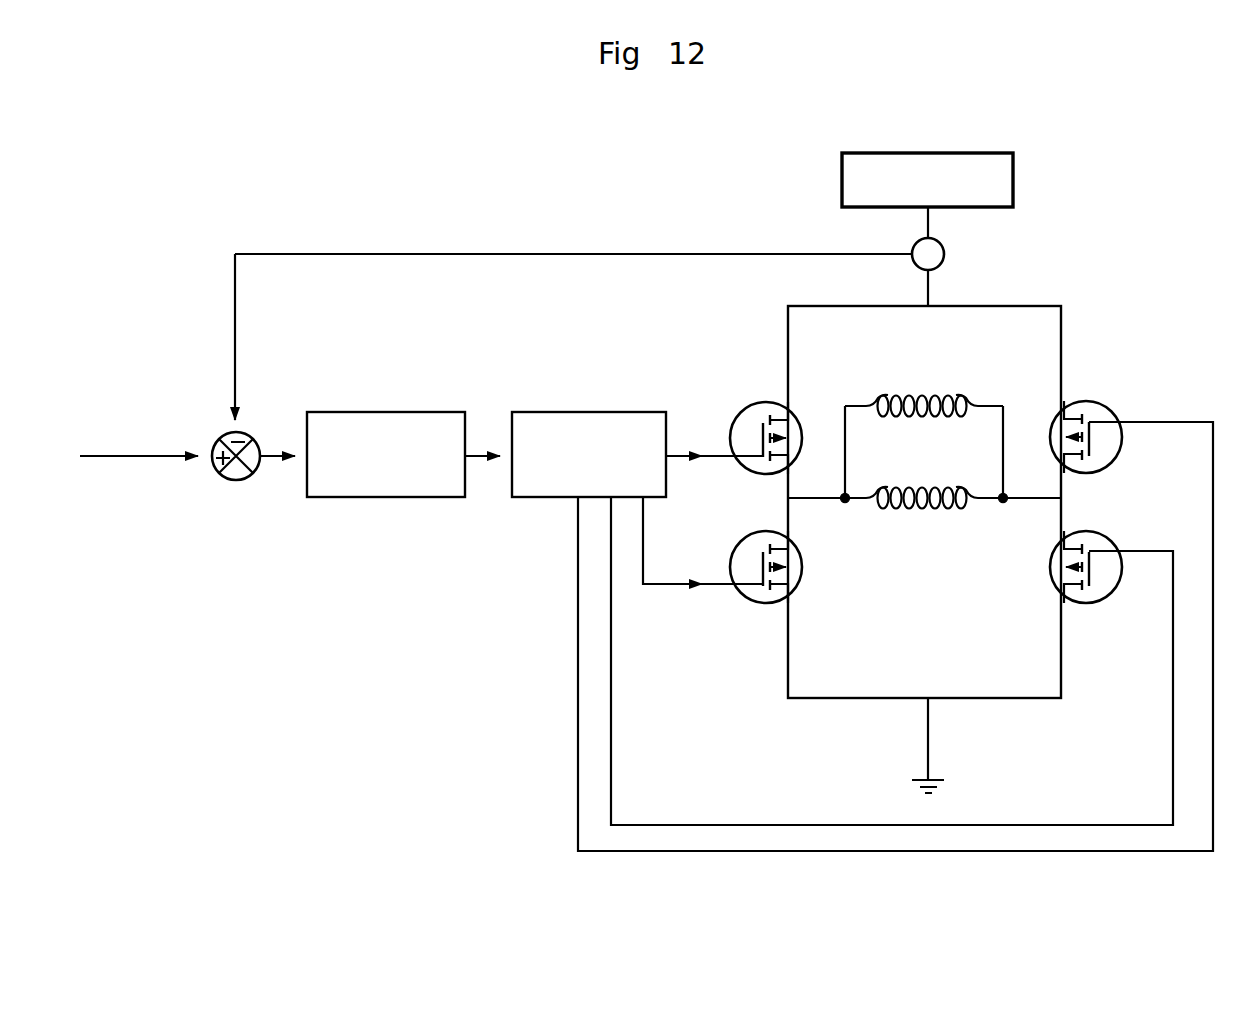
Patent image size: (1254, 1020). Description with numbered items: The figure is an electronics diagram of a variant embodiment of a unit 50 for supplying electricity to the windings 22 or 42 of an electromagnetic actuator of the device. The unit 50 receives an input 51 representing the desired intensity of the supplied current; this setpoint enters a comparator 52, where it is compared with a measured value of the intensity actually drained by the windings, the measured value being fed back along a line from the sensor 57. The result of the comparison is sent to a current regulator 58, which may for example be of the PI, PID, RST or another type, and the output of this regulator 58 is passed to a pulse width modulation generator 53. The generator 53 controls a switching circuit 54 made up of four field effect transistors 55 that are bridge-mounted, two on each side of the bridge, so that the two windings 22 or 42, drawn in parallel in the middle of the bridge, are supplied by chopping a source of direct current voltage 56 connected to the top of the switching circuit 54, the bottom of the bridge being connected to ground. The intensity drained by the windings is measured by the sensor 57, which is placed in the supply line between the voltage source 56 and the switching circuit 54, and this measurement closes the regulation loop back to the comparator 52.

The unit for supplying electricity 50 is at (350, 682).
The input 51 is at (128, 455).
The comparator 52 is at (228, 482).
The pulse width modulation generator 53 is at (567, 460).
The switching circuit 54 is at (902, 484).
The field effect transistors 55 is at (757, 405).
The source of direct current voltage 56 is at (1015, 180).
The sensor 57 is at (945, 254).
The current regulator 58 is at (423, 498).
The windings 22 is at (830, 342).
The windings 42 is at (903, 493).